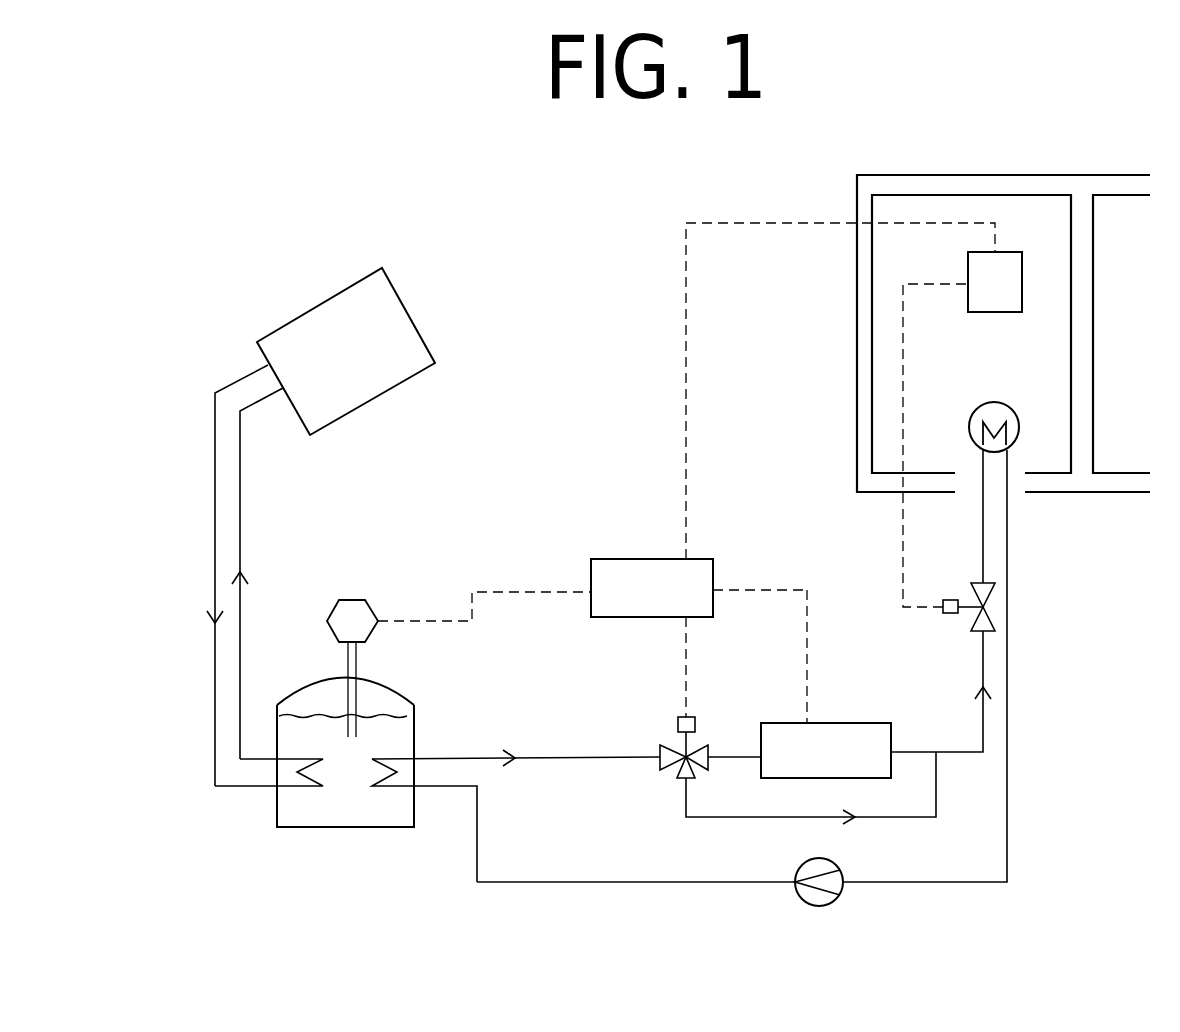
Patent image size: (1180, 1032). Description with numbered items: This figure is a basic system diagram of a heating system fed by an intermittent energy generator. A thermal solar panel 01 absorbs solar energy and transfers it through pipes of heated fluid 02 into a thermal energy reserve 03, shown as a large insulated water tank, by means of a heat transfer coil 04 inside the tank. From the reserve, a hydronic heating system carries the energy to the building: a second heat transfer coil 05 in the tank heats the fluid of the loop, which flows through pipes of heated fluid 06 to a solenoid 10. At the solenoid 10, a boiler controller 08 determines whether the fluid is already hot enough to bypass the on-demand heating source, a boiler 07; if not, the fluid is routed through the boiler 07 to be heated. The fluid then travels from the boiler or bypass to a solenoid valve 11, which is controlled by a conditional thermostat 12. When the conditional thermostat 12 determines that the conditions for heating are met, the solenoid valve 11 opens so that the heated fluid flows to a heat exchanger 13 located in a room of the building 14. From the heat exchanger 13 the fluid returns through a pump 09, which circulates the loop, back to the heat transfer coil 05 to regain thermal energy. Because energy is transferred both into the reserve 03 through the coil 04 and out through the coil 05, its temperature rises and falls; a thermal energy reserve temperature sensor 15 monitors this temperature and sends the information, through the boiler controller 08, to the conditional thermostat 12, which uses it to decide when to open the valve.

The thermal solar panel 01 is at (346, 351).
The pipes of heated fluid 02 is at (224, 575).
The thermal energy reserve 03 is at (345, 776).
The heat transfer coil 04 is at (269, 756).
The heat transfer coil 05 is at (422, 820).
The pipes of heated fluid 06 is at (516, 740).
The boiler 07 is at (838, 707).
The boiler controller 08 is at (686, 470).
The pump 09 is at (742, 686).
The solenoid 10 is at (670, 759).
The solenoid valve 11 is at (949, 457).
The conditional thermostat 12 is at (995, 282).
The heat exchanger 13 is at (1000, 480).
The building 14 is at (1003, 310).
The thermal energy reserve temperature sensor 15 is at (352, 647).